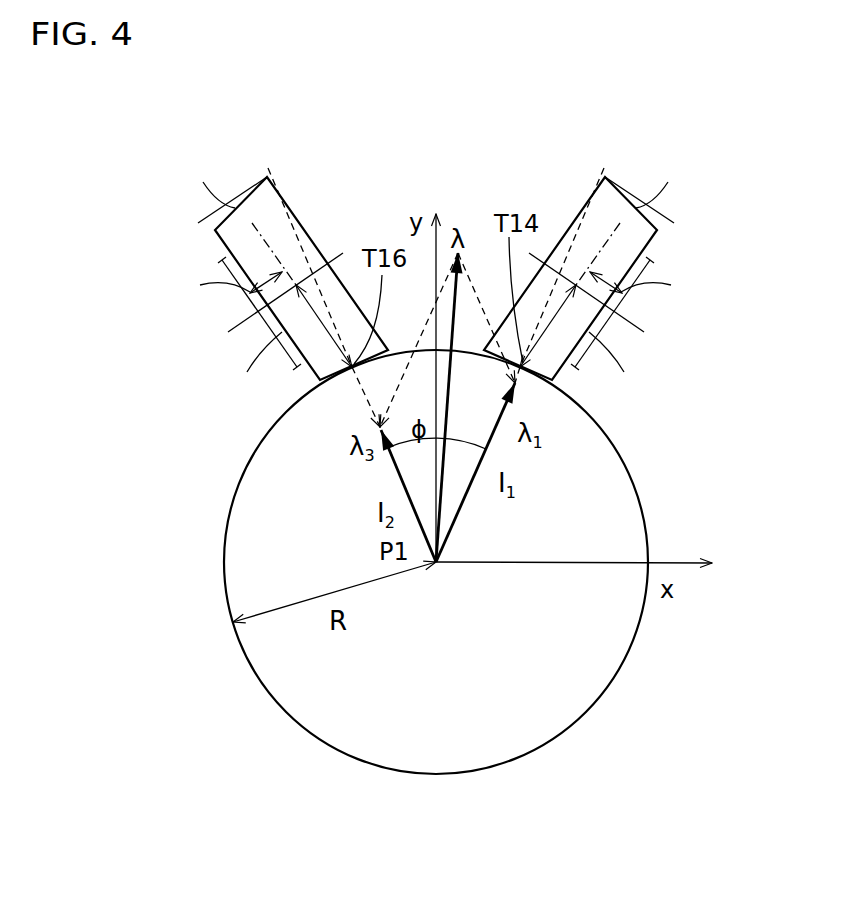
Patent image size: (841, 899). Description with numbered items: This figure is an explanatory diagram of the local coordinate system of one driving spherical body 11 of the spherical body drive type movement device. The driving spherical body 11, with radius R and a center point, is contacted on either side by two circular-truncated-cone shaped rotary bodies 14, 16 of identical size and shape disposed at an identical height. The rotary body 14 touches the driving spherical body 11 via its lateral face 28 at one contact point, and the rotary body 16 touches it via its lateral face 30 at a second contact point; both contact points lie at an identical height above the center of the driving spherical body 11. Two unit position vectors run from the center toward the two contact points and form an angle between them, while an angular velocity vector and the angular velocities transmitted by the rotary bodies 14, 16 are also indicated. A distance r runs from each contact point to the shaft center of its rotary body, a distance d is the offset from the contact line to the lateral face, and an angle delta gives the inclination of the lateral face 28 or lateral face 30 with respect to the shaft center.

The driving spherical body 11 is at (580, 683).
The rotary body 14 is at (565, 204).
The rotary body 16 is at (306, 204).
The lateral face 28 is at (618, 256).
The lateral face 30 is at (253, 256).